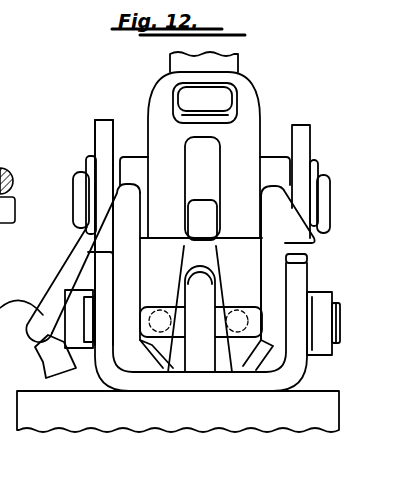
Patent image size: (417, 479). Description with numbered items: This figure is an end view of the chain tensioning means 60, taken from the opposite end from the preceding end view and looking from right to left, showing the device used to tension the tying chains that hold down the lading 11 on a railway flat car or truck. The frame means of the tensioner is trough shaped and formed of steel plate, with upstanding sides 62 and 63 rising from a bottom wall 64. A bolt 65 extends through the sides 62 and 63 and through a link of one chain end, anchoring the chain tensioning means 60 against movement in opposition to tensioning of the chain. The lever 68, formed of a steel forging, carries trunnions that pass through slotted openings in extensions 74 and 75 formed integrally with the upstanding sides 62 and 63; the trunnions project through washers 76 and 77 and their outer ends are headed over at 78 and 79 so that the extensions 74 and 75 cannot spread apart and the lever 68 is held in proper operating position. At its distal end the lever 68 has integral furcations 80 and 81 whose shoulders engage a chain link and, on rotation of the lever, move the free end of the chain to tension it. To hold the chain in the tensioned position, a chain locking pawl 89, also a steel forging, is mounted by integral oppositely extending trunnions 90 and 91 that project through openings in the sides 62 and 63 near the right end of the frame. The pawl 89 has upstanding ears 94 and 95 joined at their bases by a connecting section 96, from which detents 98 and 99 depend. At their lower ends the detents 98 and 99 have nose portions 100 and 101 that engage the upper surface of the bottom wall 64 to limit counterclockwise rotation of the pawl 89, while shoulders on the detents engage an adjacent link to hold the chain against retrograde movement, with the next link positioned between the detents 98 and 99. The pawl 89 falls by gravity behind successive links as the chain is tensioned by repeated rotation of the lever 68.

The lading 11 is at (192, 426).
The chain tensioning means 60 is at (126, 103).
The upstanding side 62 is at (310, 262).
The upstanding side 63 is at (100, 274).
The bottom wall 64 is at (205, 383).
The bolt 65 is at (336, 344).
The lever 68 is at (274, 86).
The extension 74 is at (300, 132).
The extension 75 is at (98, 128).
The washer 76 is at (318, 163).
The washer 77 is at (87, 160).
The headed-over end 78 is at (323, 193).
The headed-over end 79 is at (80, 192).
The furcation 80 is at (228, 182).
The furcation 81 is at (170, 172).
The chain locking pawl 89 is at (231, 228).
The trunnion 90 is at (312, 335).
The trunnion 91 is at (80, 330).
The upstanding ear 94 is at (292, 223).
The upstanding ear 95 is at (112, 221).
The connecting section 96 is at (166, 243).
The detent 98 is at (262, 373).
The detent 99 is at (157, 352).
The nose portion 100 is at (242, 360).
The nose portion 101 is at (160, 372).